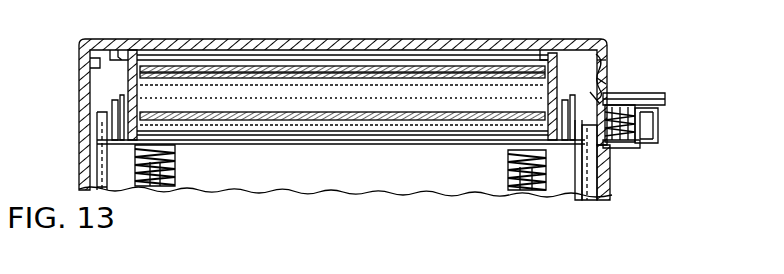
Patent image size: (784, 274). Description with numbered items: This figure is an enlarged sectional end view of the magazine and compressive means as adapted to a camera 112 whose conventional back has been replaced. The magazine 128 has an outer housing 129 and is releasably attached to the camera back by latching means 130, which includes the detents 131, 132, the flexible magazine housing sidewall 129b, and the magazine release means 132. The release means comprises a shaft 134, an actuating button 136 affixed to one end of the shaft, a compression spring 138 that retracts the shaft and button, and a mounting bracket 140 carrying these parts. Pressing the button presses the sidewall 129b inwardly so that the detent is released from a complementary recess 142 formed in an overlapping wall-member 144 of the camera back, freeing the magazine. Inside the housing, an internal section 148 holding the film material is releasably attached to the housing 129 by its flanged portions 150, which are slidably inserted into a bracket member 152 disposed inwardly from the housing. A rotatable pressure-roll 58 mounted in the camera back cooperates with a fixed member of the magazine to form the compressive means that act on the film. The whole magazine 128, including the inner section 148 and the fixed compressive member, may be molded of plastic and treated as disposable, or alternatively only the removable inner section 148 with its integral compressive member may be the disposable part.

The camera 112 is at (164, 29).
The magazine release means 132 is at (84, 91).
The internal section 148 is at (204, 57).
The flanged portions 150 is at (563, 52).
The magazine 128 is at (333, 37).
The outer housing 129 is at (413, 49).
The pressure-roll 58 is at (120, 97).
The shaft 134 is at (606, 160).
The flexible magazine housing sidewall 129b is at (660, 196).
The bracket member 152 is at (597, 57).
The recess 142 is at (608, 58).
The overlapping wall-member 144 is at (608, 82).
The detent 131 is at (594, 100).
The latching means 130 is at (657, 89).
The mounting bracket 140 is at (660, 101).
The actuating button 136 is at (660, 115).
The compression spring 138 is at (637, 146).